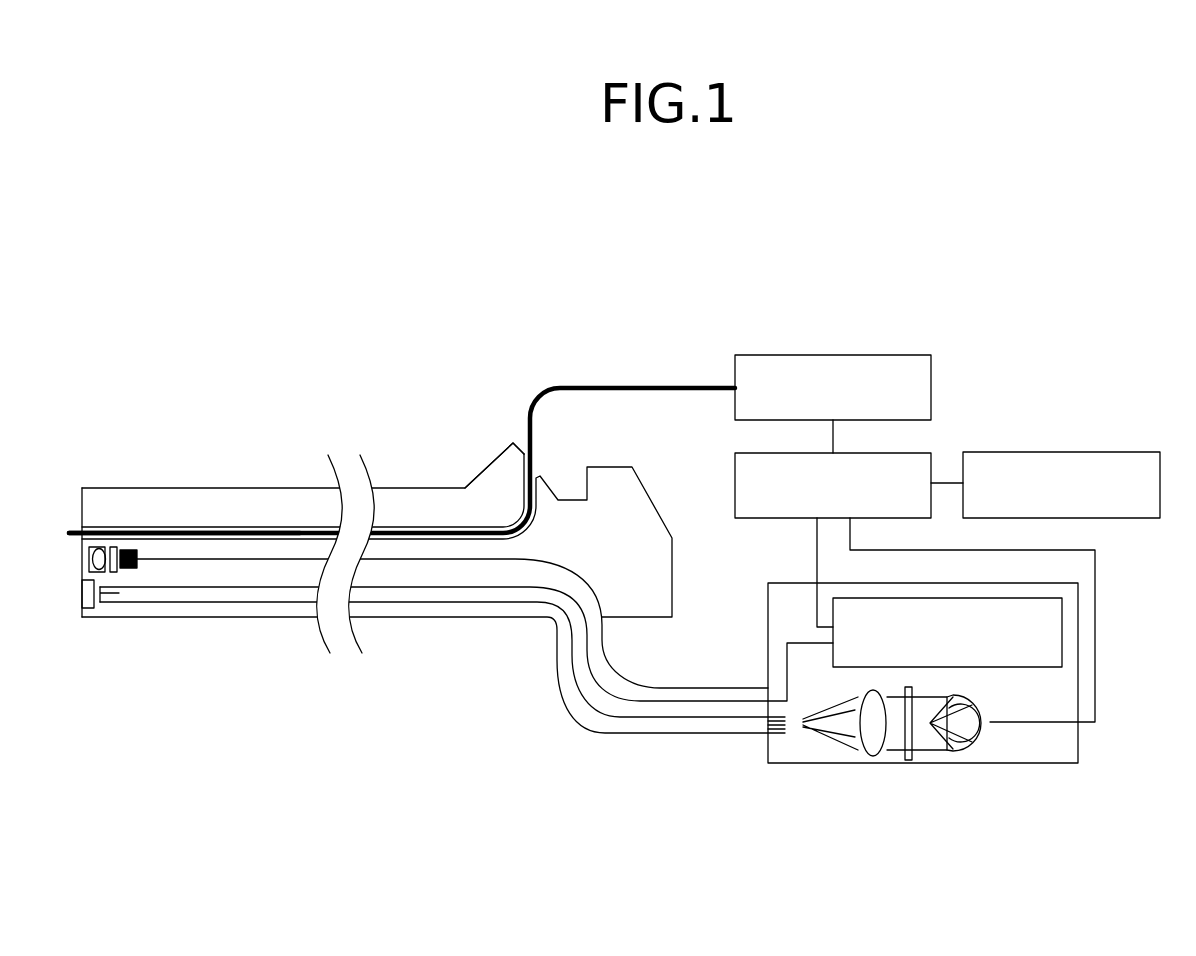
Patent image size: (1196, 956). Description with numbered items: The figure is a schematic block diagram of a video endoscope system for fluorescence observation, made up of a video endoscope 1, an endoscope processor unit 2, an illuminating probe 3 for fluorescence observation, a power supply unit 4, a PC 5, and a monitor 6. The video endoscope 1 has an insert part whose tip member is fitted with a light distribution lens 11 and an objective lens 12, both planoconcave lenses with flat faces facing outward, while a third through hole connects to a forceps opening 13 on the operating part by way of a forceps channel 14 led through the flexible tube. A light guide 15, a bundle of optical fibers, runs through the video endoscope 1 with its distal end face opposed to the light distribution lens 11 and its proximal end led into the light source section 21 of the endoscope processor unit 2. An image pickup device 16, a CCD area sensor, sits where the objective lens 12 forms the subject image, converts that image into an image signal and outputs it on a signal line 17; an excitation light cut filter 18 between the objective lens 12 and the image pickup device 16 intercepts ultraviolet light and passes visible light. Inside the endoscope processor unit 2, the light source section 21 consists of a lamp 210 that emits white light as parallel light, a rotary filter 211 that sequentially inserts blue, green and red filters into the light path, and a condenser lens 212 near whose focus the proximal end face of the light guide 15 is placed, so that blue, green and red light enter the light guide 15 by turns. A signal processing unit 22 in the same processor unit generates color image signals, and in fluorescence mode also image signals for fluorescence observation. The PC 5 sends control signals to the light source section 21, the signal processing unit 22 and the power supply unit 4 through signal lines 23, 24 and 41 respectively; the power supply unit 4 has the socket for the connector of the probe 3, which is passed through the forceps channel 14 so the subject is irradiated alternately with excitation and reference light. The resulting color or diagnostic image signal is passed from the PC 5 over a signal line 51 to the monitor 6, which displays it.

The video endoscope 1 is at (410, 632).
The light distribution lens 11 is at (90, 610).
The objective lens 12 is at (92, 531).
The forceps opening 13 is at (522, 453).
The forceps channel 14 is at (407, 527).
The light guide 15 is at (280, 605).
The image pickup device 16 is at (128, 568).
The signal line 17 is at (473, 562).
The excitation light cut filter 18 is at (118, 545).
The endoscope processor unit 2 is at (904, 723).
The light source section 21 is at (938, 775).
The lamp 210 is at (973, 748).
The rotary filter 211 is at (912, 763).
The condenser lens 212 is at (870, 752).
The signal processing unit 22 is at (1062, 630).
The signal line 23 is at (1095, 560).
The signal line 24 is at (817, 565).
The illuminating probe for fluorescence observation 3 is at (602, 386).
The power supply unit 4 is at (863, 355).
The signal line 41 is at (833, 433).
The PC 5 is at (735, 483).
The signal line 51 is at (947, 483).
The monitor 6 is at (1062, 452).